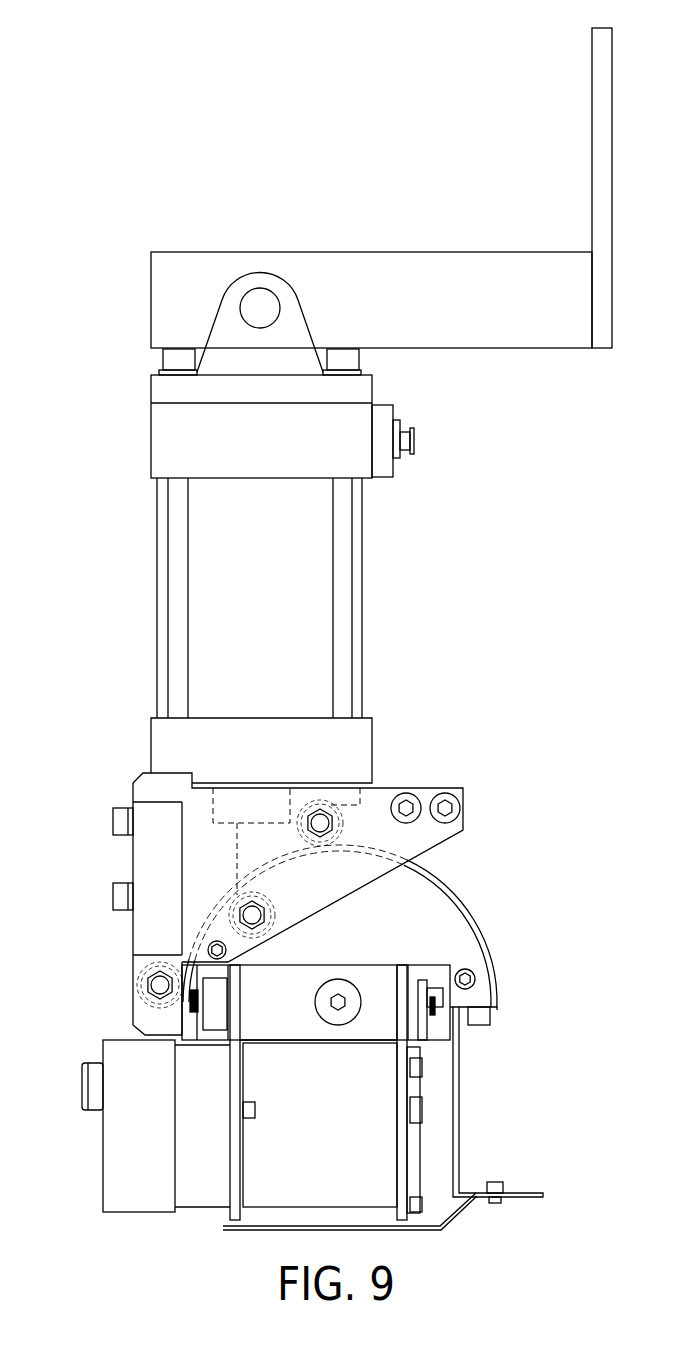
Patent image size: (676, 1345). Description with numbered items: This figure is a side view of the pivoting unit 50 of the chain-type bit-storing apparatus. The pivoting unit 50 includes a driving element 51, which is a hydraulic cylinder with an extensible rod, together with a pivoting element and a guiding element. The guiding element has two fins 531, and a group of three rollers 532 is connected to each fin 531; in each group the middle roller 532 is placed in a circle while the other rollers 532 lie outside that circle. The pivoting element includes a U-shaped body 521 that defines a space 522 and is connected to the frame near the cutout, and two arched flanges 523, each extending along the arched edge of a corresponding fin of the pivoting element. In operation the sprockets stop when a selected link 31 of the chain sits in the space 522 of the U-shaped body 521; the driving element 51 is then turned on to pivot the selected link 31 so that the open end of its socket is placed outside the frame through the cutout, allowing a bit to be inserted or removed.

The pivoting unit 50 is at (86, 218).
The driving element 51 is at (208, 572).
The fin 531 is at (163, 787).
The arched flange 523 is at (230, 883).
The roller 532 is at (345, 825).
The U-shaped body 521 is at (452, 1077).
The space 522 is at (428, 1170).
The link 31 is at (223, 1215).